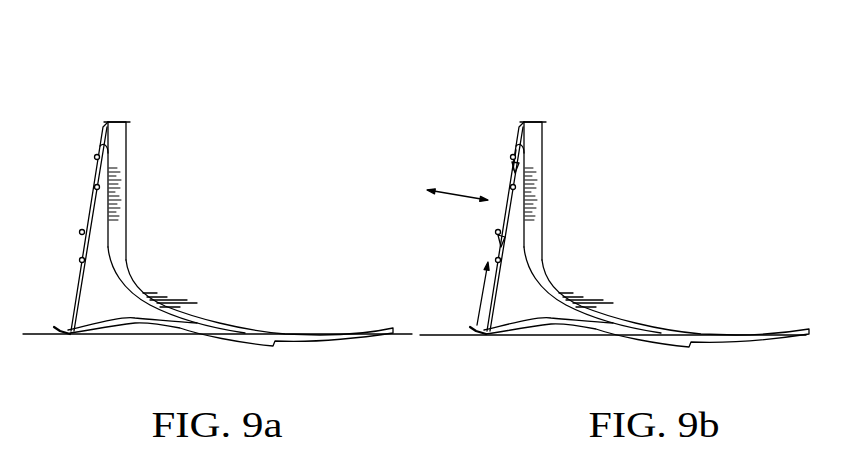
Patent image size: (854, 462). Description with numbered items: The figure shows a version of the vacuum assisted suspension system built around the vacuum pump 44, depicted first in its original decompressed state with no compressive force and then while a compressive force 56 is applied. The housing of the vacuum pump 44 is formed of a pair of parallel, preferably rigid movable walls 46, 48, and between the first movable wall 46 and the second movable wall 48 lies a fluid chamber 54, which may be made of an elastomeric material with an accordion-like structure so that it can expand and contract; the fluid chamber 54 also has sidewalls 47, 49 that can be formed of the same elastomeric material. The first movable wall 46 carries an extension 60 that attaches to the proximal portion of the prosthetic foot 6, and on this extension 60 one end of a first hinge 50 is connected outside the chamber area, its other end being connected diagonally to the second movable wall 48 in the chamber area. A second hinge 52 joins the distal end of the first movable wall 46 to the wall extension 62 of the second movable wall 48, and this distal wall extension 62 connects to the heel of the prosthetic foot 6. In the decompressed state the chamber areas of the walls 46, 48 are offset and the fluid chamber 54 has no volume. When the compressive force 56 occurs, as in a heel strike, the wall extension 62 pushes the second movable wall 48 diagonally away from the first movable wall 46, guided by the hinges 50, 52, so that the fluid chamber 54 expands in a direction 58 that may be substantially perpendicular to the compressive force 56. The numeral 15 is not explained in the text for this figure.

In FIG. 9a, the prosthetic foot 6 is at (127, 122).
In FIG. 9b, the prosthetic foot 6 is at (543, 122).
In FIG. 9a, the binding 15 is at (66, 277).
In FIG. 9a, the vacuum pump 44 is at (106, 104).
In FIG. 9b, the vacuum pump 44 is at (522, 104).
In FIG. 9a, the first movable wall 46 is at (90, 203).
In FIG. 9b, the first movable wall 46 is at (500, 218).
In FIG. 9b, the sidewall 47 is at (497, 243).
In FIG. 9a, the second movable wall 48 is at (86, 234).
In FIG. 9b, the second movable wall 48 is at (504, 240).
In FIG. 9b, the sidewall 49 is at (513, 160).
In FIG. 9a, the first hinge 50 is at (94, 157).
In FIG. 9b, the first hinge 50 is at (509, 155).
In FIG. 9a, the second hinge 52 is at (80, 249).
In FIG. 9b, the second hinge 52 is at (494, 235).
In FIG. 9b, the fluid chamber 54 is at (507, 189).
In FIG. 9b, the compressive force 56 is at (480, 290).
In FIG. 9b, the direction of the fluid chamber expansion 58 is at (447, 190).
In FIG. 9a, the extension 60 is at (100, 148).
In FIG. 9b, the extension 60 is at (512, 147).
In FIG. 9a, the wall extension 62 is at (72, 298).
In FIG. 9b, the wall extension 62 is at (470, 325).